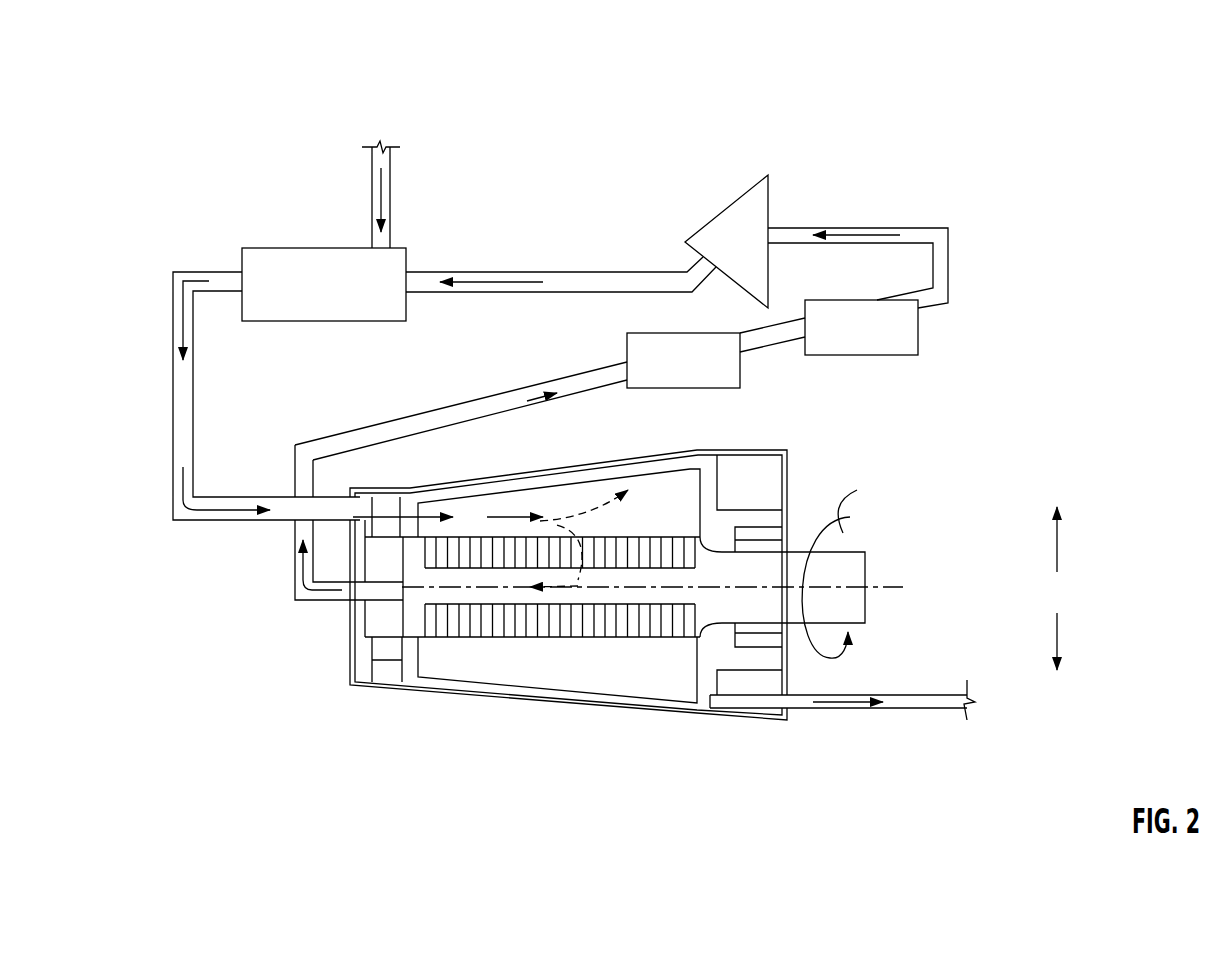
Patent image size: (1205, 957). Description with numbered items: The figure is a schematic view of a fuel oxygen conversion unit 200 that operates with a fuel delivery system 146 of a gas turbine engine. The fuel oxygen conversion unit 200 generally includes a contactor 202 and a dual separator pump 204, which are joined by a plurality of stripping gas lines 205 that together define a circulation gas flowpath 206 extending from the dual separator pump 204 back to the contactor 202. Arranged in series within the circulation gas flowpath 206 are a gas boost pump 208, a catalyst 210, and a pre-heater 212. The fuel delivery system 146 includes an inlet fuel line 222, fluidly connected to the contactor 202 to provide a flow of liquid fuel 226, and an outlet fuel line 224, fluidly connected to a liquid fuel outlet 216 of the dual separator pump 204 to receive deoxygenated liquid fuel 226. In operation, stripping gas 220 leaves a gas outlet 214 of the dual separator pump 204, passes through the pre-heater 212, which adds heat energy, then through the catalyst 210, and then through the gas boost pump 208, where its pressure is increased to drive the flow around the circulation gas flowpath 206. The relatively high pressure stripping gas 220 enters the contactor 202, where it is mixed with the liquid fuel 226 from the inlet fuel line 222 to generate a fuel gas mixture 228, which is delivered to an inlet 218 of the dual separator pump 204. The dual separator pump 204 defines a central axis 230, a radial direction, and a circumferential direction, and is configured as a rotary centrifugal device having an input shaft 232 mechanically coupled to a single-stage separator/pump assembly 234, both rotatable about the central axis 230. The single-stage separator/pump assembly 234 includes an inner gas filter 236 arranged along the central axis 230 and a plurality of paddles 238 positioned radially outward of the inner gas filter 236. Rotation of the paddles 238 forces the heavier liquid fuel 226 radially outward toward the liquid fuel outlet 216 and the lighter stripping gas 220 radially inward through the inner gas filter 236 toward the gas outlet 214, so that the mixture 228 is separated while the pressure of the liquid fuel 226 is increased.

The fuel delivery system 146 is at (433, 153).
The fuel oxygen conversion unit 200 is at (975, 163).
The contactor 202 is at (290, 248).
The dual separator pump 204 is at (609, 599).
The stripping gas line 205 is at (563, 270).
The circulation gas flowpath 206 is at (622, 273).
The gas boost pump 208 is at (742, 190).
The catalyst 210 is at (888, 355).
The pre-heater 212 is at (703, 388).
The gas outlet 214 is at (352, 592).
The liquid fuel outlet 216 is at (802, 704).
The inlet 218 is at (340, 511).
The stripping gas 220 is at (492, 275).
The inlet fuel line 222 is at (390, 197).
The outlet fuel line 224 is at (903, 693).
The liquid fuel 226 is at (372, 197).
The fuel gas mixture 228 is at (183, 322).
The central axis 230 is at (850, 588).
The input shaft 232 is at (783, 563).
The single-stage separator/pump assembly 234 is at (630, 468).
The inner gas filter 236 is at (500, 627).
The paddles 238 is at (588, 495).